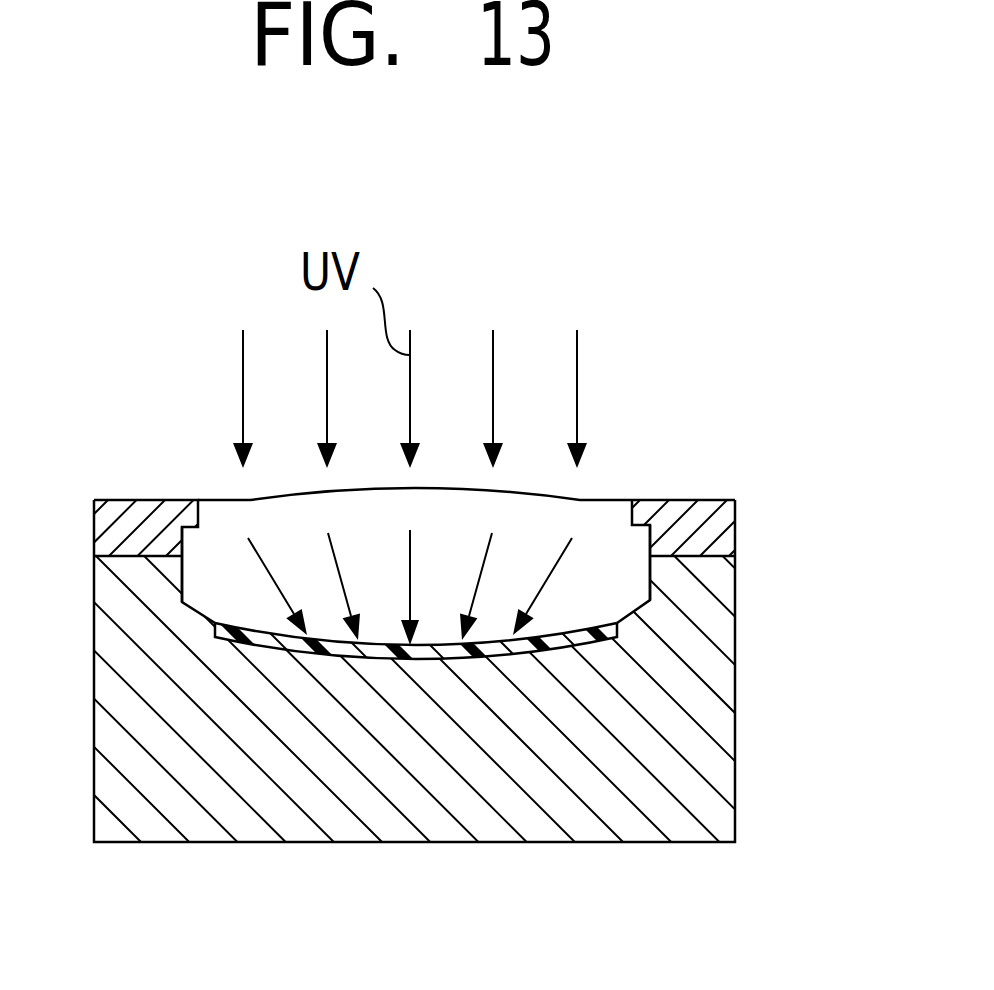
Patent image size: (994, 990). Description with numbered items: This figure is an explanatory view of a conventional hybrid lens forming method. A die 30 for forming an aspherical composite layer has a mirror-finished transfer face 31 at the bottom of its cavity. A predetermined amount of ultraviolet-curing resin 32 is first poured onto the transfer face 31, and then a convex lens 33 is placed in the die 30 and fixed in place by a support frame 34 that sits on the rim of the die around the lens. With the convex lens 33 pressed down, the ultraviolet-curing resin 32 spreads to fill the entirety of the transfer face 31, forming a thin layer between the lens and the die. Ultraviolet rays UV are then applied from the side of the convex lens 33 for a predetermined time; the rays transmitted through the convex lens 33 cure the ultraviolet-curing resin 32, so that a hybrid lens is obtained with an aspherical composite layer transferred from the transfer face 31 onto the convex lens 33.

The die 30 is at (703, 688).
The transfer face 31 is at (553, 640).
The ultraviolet-curing resin 32 is at (343, 655).
The convex lens 33 is at (530, 533).
The support frame 34 is at (703, 532).